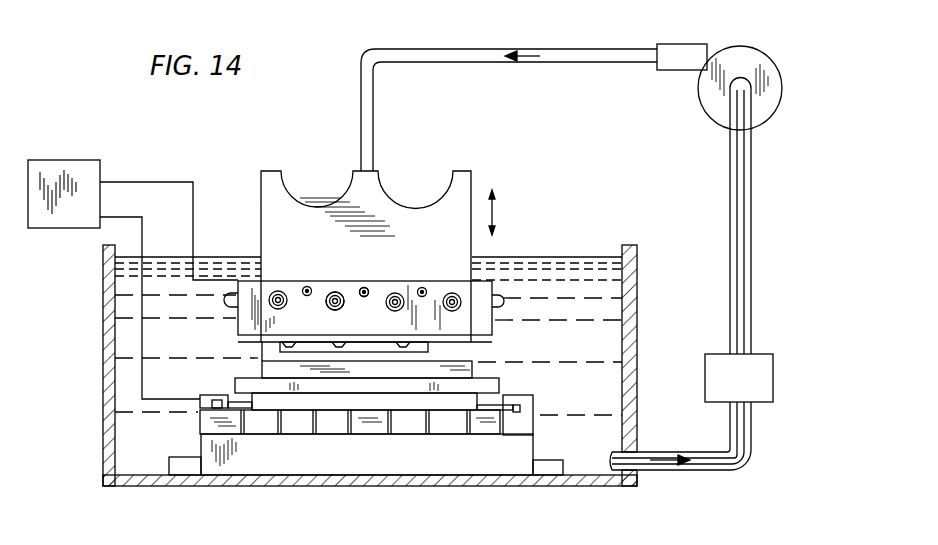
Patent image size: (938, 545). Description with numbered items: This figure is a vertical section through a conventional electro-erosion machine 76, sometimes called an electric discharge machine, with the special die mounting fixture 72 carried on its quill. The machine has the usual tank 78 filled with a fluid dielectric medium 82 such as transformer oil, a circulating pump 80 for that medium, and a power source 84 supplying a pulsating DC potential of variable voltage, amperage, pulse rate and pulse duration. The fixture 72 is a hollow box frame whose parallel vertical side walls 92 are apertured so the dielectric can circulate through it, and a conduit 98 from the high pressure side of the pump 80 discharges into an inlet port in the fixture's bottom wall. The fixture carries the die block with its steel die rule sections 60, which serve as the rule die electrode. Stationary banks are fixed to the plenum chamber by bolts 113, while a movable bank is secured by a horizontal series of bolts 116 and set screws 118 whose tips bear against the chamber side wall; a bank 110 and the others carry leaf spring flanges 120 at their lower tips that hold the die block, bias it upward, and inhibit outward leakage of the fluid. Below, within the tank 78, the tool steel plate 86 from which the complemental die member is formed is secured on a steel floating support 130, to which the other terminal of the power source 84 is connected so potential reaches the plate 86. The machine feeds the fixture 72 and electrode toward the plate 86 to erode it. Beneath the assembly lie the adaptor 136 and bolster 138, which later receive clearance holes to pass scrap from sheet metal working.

The die rule section 60 is at (280, 347).
The die mounting fixture 72 is at (472, 172).
The electro-erosion machine 76 is at (95, 487).
The tank 78 is at (192, 480).
The circulating pump 80 is at (759, 60).
The fluid dielectric medium 82 is at (608, 318).
The power source 84 is at (83, 218).
The tool steel plate 86 is at (466, 369).
The side walls 92 is at (372, 194).
The conduit 98 is at (467, 55).
The bank 110 is at (484, 324).
The bolts 113 is at (503, 301).
The bolts 116 is at (336, 303).
The set screws 118 is at (365, 295).
The leaf spring flanges 120 is at (493, 344).
The floating support 130 is at (536, 452).
The adaptor 136 is at (240, 388).
The bolster 138 is at (322, 462).